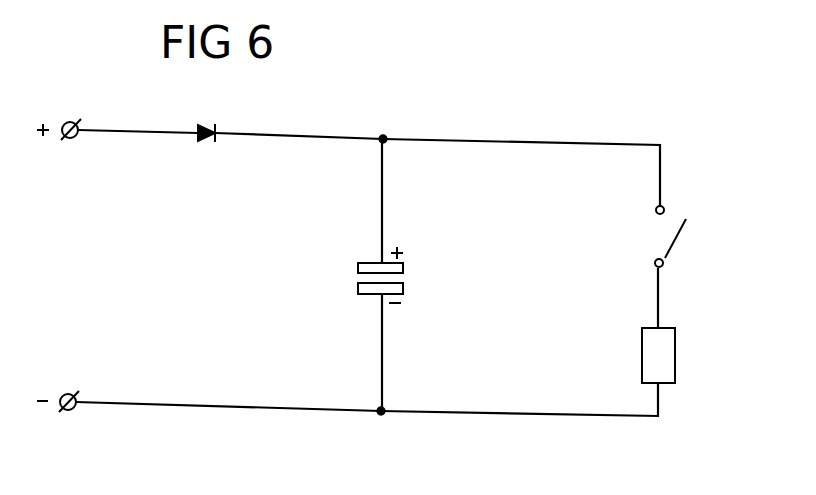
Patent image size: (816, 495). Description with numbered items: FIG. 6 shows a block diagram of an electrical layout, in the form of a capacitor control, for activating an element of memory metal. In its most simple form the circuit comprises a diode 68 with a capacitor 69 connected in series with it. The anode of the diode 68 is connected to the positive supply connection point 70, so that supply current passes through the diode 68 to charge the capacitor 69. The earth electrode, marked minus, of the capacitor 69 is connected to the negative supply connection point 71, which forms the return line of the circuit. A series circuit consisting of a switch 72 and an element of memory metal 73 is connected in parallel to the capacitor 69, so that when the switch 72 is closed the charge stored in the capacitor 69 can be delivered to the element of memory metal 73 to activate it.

The diode 68 is at (218, 125).
The capacitor 69 is at (356, 264).
The positive supply connection point 70 is at (77, 122).
The negative supply connection point 71 is at (74, 409).
The switch 72 is at (674, 242).
The element of memory metal 73 is at (675, 348).